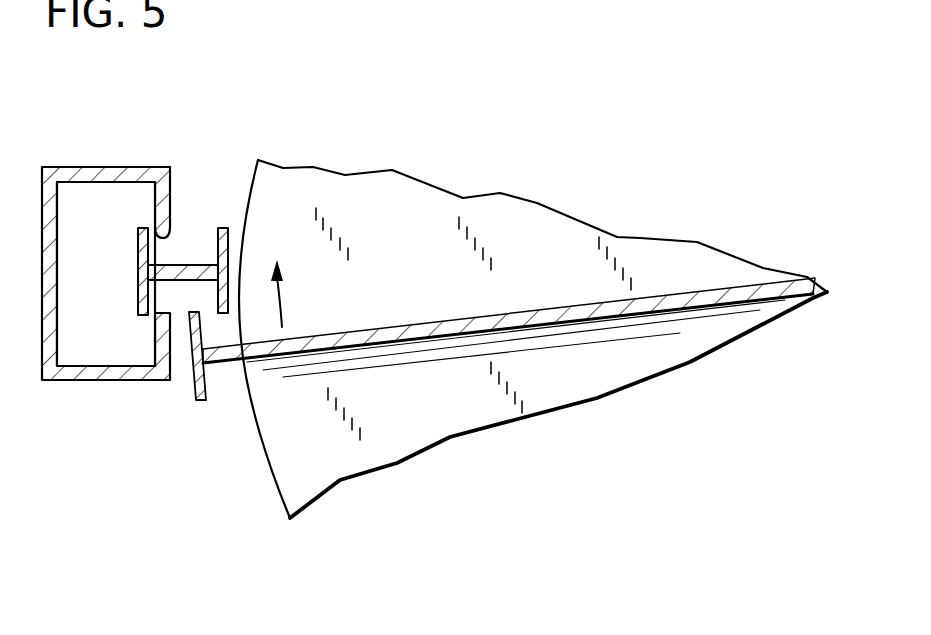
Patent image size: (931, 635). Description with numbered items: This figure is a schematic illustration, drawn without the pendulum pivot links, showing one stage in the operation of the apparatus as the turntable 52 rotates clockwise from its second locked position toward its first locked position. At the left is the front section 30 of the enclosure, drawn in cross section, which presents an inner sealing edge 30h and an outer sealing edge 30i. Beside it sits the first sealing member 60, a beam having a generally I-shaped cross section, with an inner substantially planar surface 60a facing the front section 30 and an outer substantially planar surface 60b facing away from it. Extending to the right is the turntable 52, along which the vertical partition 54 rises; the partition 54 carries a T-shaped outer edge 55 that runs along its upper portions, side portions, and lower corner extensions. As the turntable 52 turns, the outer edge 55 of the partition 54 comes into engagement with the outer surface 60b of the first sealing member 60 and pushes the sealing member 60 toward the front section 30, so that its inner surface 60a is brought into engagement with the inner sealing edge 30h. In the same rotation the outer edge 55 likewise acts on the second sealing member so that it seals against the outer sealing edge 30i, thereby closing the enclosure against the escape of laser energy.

The front section 30 is at (65, 381).
The inner sealing edge 30h is at (183, 264).
The outer sealing edge 30i is at (160, 313).
The turntable 52 is at (380, 187).
The vertical partition 54 is at (235, 357).
The T-shaped outer edge 55 is at (200, 400).
The first sealing member 60 is at (218, 228).
The inner substantially planar surface 60a is at (197, 272).
The outer substantially planar surface 60b is at (172, 238).